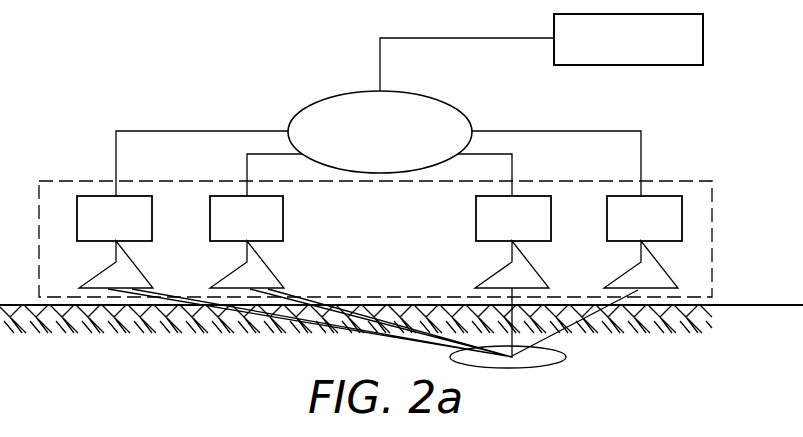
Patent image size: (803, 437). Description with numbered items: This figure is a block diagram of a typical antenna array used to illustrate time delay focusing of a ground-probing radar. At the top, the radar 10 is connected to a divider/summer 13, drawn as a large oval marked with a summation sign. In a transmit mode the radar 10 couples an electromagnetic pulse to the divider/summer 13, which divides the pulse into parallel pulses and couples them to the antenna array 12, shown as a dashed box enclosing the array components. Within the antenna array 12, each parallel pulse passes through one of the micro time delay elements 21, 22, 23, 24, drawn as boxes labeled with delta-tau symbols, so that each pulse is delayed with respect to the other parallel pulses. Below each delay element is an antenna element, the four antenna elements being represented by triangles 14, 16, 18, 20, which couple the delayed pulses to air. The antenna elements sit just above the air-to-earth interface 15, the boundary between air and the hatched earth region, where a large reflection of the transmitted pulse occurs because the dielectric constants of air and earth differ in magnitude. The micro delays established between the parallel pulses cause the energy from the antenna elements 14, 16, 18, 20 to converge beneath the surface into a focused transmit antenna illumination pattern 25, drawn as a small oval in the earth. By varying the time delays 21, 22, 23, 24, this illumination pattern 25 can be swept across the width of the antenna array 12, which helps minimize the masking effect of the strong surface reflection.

The radar 10 is at (703, 38).
The antenna array 12 is at (713, 200).
The divider/summer 13 is at (462, 109).
The antenna element 14 is at (94, 277).
The air-to-earth interface 15 is at (775, 305).
The antenna element 16 is at (225, 277).
The antenna element 18 is at (490, 277).
The antenna element 20 is at (622, 277).
The micro time delay element 21 is at (77, 218).
The micro time delay element 22 is at (210, 218).
The micro time delay element 23 is at (476, 218).
The micro time delay element 24 is at (607, 218).
The antenna illumination pattern 25 is at (566, 355).